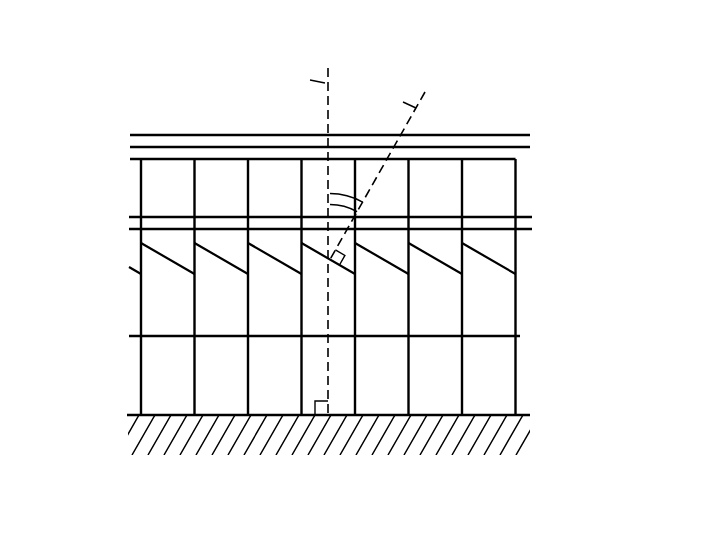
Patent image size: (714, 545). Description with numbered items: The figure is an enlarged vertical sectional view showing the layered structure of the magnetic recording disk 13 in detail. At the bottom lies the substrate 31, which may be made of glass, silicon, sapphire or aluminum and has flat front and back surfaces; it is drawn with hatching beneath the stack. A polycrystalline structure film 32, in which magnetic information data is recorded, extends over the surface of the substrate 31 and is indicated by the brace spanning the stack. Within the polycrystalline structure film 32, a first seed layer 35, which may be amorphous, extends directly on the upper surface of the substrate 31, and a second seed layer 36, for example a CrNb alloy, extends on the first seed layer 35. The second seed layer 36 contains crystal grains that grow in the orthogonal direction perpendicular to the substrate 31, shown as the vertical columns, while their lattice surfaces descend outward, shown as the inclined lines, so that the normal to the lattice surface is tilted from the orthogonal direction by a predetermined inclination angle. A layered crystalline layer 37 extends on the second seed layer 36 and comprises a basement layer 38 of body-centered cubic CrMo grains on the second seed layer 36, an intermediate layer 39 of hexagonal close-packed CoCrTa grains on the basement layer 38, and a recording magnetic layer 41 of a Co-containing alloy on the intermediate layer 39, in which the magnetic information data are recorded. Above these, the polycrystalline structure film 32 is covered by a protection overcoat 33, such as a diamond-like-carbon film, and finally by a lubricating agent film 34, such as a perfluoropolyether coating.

The magnetic recording disk 13 is at (207, 107).
The substrate 31 is at (518, 413).
The polycrystalline structure film 32 is at (115, 163).
The protection overcoat 33 is at (143, 153).
The lubricating agent film 34 is at (135, 135).
The first seed layer 35 is at (520, 336).
The second seed layer 36 is at (490, 263).
The layered crystalline layer 37 is at (442, 158).
The basement layer 38 is at (530, 229).
The intermediate layer 39 is at (517, 216).
The recording magnetic layer 41 is at (532, 147).